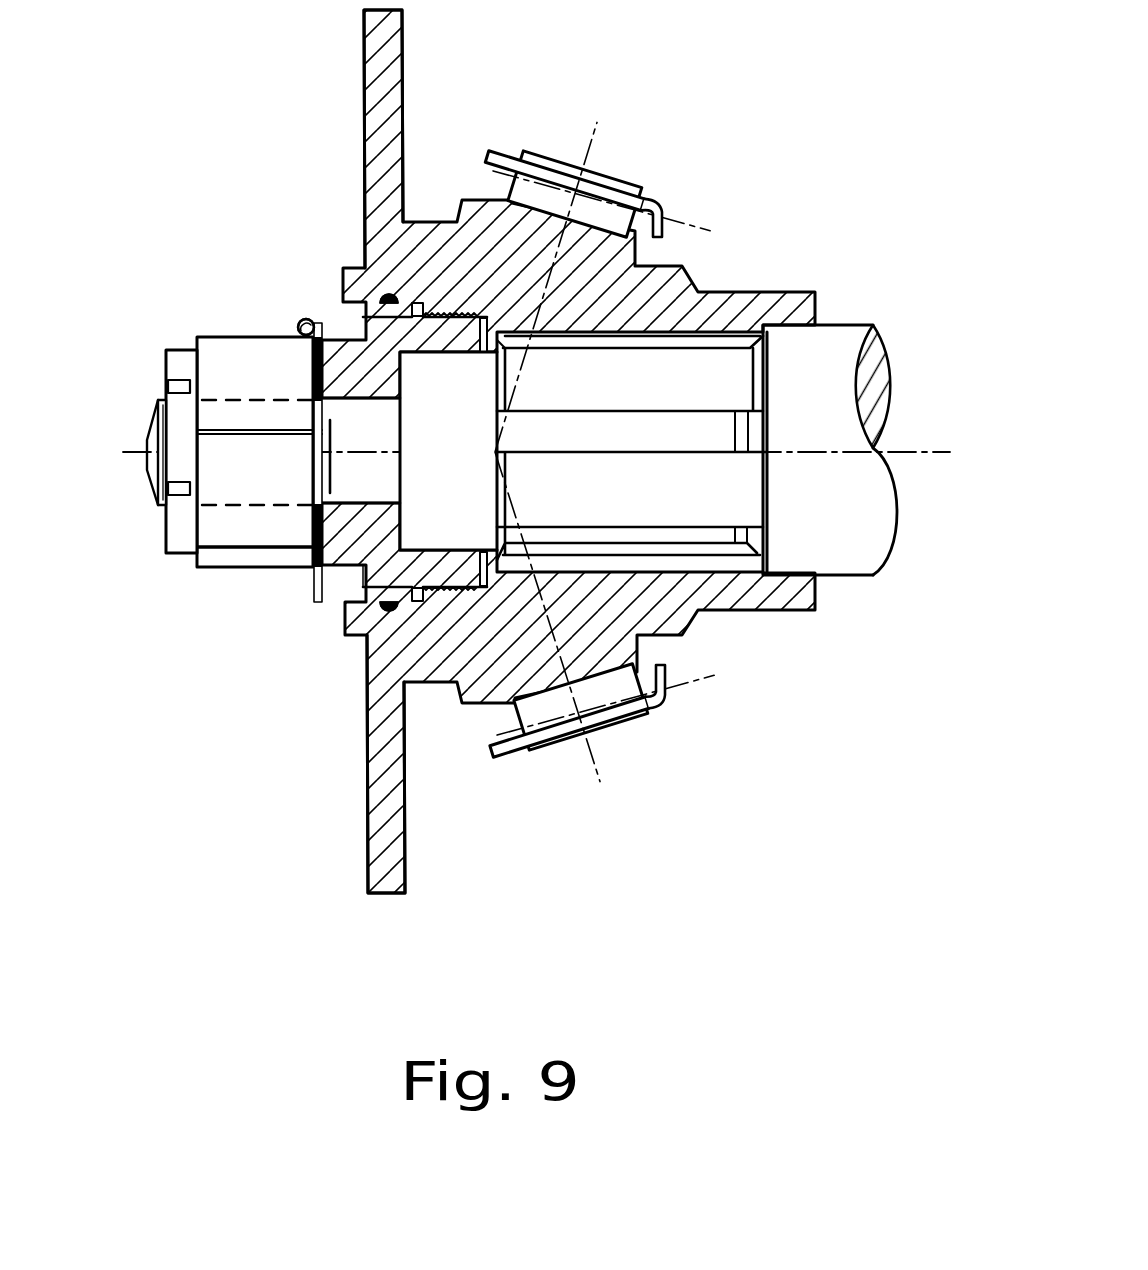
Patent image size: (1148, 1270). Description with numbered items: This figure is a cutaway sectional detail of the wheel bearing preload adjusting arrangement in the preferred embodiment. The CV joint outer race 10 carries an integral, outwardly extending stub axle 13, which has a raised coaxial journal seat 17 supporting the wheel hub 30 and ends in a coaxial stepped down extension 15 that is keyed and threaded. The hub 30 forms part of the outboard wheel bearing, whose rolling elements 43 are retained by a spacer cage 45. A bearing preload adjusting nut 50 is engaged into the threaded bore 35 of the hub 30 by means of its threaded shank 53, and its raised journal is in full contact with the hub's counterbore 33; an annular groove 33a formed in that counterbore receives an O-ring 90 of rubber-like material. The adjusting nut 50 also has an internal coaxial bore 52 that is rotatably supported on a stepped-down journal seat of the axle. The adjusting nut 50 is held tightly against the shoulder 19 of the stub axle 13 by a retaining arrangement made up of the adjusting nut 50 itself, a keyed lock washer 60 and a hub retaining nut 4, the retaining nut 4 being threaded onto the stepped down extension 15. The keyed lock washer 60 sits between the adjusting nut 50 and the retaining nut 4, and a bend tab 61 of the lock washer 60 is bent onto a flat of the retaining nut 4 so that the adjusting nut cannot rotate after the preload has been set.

The hub retaining lock nut 4 is at (220, 572).
The CV joint outer race 10 is at (830, 450).
The outwardly extending stub axle 13 is at (152, 424).
The stepped down extension 15 is at (162, 392).
The raised coaxial journal seat 17 is at (838, 589).
The shoulder 19 is at (405, 402).
The wheel hub 30 is at (418, 242).
The counterbore 33 is at (367, 697).
The annular groove 33a is at (374, 628).
The threaded bore 35 is at (447, 592).
The rolling elements 43 is at (551, 147).
The spacer cage 45 is at (668, 203).
The bearing preload adjusting nut 50 is at (385, 322).
The internal coaxial bore 52 is at (352, 586).
The threaded shank 53 is at (458, 578).
The keyed lock washer 60 is at (300, 316).
The bend tab 61 is at (306, 327).
The O-ring 90 is at (389, 452).